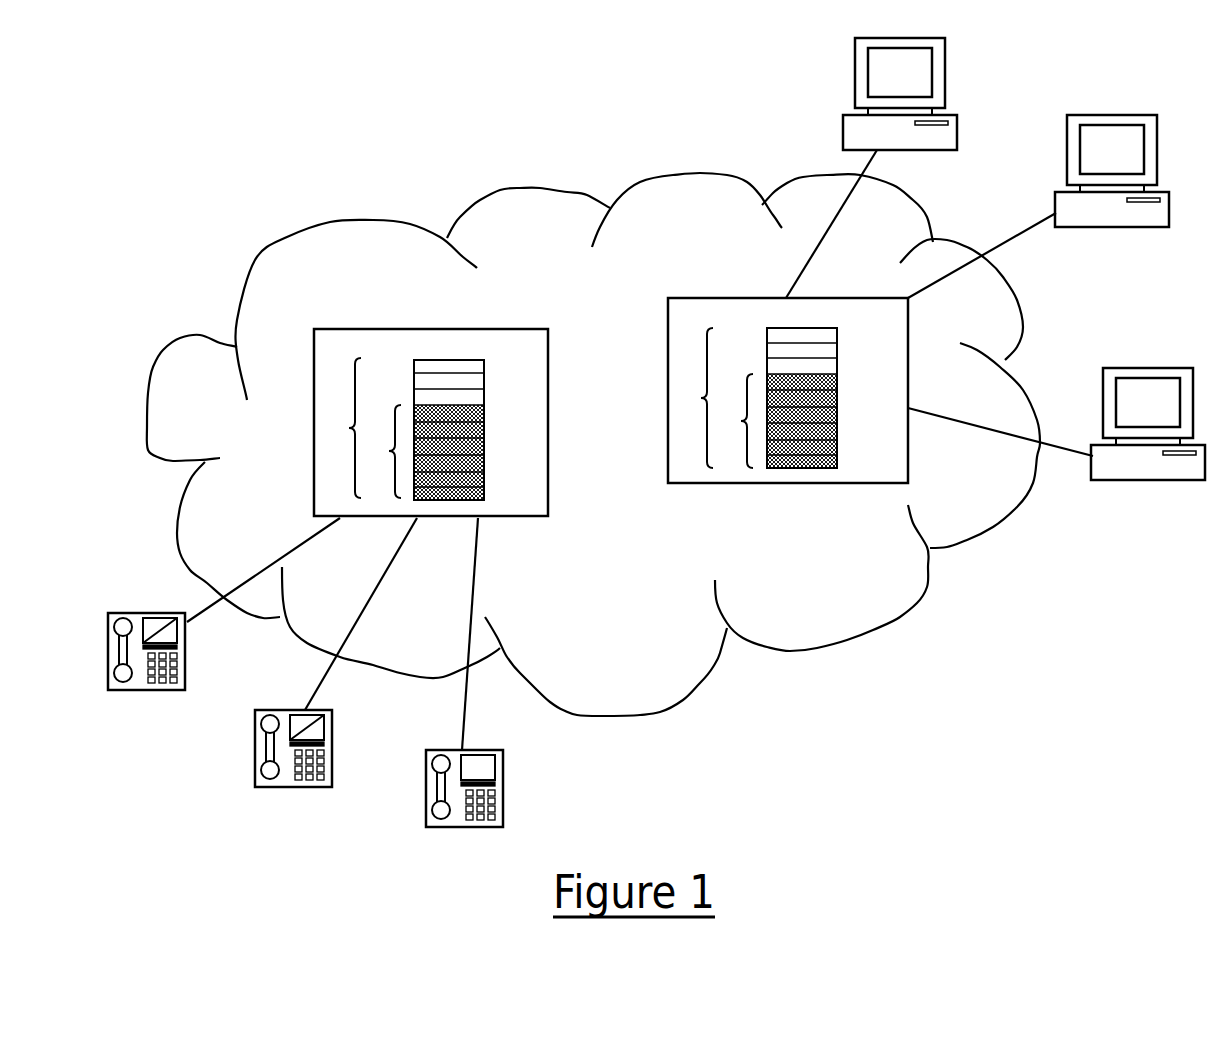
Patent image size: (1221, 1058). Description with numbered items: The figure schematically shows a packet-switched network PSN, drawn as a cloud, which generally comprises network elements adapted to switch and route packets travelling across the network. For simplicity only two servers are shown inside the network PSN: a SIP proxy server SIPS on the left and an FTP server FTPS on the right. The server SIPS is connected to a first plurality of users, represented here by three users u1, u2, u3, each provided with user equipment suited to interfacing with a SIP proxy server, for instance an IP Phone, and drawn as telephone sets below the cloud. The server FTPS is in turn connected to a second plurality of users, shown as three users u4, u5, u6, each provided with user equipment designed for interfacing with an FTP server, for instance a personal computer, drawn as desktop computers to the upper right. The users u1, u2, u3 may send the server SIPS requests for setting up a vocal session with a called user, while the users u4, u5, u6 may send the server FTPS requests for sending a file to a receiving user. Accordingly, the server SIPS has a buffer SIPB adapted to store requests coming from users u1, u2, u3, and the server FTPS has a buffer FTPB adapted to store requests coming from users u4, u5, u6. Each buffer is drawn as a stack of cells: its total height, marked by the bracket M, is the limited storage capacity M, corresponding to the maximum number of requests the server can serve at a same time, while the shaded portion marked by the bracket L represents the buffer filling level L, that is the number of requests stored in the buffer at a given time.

The packet-switched network PSN is at (337, 223).
The SIP proxy server SIPS is at (314, 470).
The FTP server FTPS is at (668, 420).
The buffer SIPB is at (485, 437).
The buffer FTPB is at (838, 406).
The buffer storage capacity M is at (520, 413).
The buffer filling level L is at (560, 436).
The user u1 is at (158, 690).
The user u2 is at (290, 787).
The user u3 is at (457, 827).
The user u4 is at (855, 72).
The user u5 is at (1067, 145).
The user u6 is at (1103, 395).